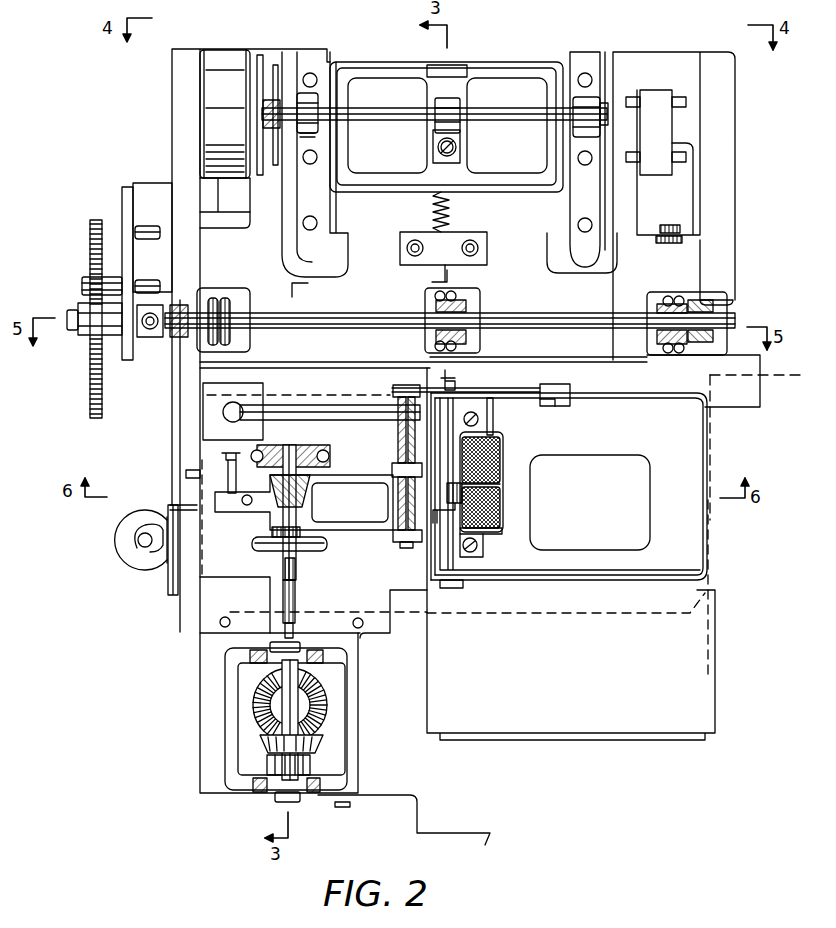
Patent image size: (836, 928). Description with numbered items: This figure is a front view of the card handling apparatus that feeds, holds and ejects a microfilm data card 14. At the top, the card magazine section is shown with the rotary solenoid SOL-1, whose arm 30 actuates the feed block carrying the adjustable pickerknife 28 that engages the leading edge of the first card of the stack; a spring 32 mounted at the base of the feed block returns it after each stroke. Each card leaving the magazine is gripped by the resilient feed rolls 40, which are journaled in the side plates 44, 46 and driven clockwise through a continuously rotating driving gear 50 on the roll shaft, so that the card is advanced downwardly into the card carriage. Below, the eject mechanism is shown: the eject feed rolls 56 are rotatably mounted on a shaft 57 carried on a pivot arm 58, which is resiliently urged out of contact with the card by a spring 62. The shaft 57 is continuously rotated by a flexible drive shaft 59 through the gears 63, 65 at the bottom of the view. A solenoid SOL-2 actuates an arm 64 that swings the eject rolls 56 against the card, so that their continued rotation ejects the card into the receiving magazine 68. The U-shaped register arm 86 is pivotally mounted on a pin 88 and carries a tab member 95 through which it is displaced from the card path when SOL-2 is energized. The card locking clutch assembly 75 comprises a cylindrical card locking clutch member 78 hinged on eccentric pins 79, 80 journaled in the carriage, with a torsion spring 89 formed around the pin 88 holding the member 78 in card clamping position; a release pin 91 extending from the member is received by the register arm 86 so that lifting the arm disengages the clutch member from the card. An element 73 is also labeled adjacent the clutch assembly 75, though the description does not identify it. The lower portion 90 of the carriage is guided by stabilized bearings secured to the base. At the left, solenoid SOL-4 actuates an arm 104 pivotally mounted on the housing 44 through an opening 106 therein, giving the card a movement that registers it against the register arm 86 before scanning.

The rotary solenoid SOL-1 is at (224, 52).
The adjustable pickerknife 28 is at (452, 67).
The arm 30 is at (458, 102).
The spring 32 is at (452, 210).
The feed rolls 40 is at (222, 288).
The side plate 46 is at (736, 270).
The driving gear 50 is at (90, 255).
The side plate 44 is at (182, 380).
The pin 88 is at (447, 385).
The tab member 95 is at (572, 391).
The register arm 86 is at (640, 398).
The solenoid SOL-2 is at (230, 386).
The arm 64 is at (318, 405).
The eject feed rolls 56 is at (322, 457).
The release pin 91 is at (494, 419).
The pin 80 is at (500, 438).
The card locking clutch assembly 75 is at (520, 458).
The card locking clutch member 78 is at (500, 474).
The torsion spring 89 is at (466, 505).
The plate 73 is at (502, 534).
The pin 79 is at (478, 543).
The pivot arm 58 is at (350, 514).
The spring 62 is at (232, 468).
The opening 106 is at (186, 474).
The solenoid SOL-4 is at (118, 548).
The arm 104 is at (168, 583).
The shaft 57 is at (297, 566).
The flexible drive shaft 59 is at (296, 594).
The lower portion of carriage 90 is at (665, 580).
The microfilm data card 14 is at (415, 613).
The receiving magazine 68 is at (708, 633).
The gear 65 is at (325, 708).
The gear 63 is at (262, 748).